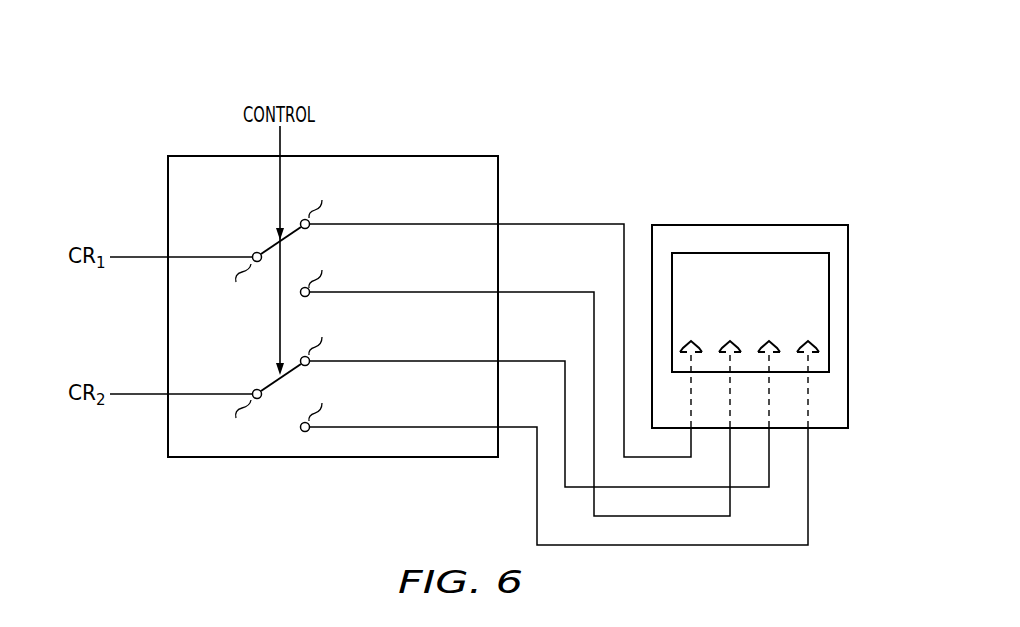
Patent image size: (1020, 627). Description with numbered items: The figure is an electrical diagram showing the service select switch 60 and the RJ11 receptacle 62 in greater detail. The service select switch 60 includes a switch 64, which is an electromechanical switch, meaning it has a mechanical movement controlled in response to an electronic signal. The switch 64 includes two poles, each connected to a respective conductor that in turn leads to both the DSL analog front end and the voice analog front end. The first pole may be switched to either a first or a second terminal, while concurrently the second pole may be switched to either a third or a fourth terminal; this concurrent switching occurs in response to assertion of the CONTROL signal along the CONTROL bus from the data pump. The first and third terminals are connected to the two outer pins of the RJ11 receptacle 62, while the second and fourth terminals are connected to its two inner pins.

The service select switch 60 is at (333, 331).
The RJ11 receptacle 62 is at (749, 224).
The switch 64 is at (220, 216).